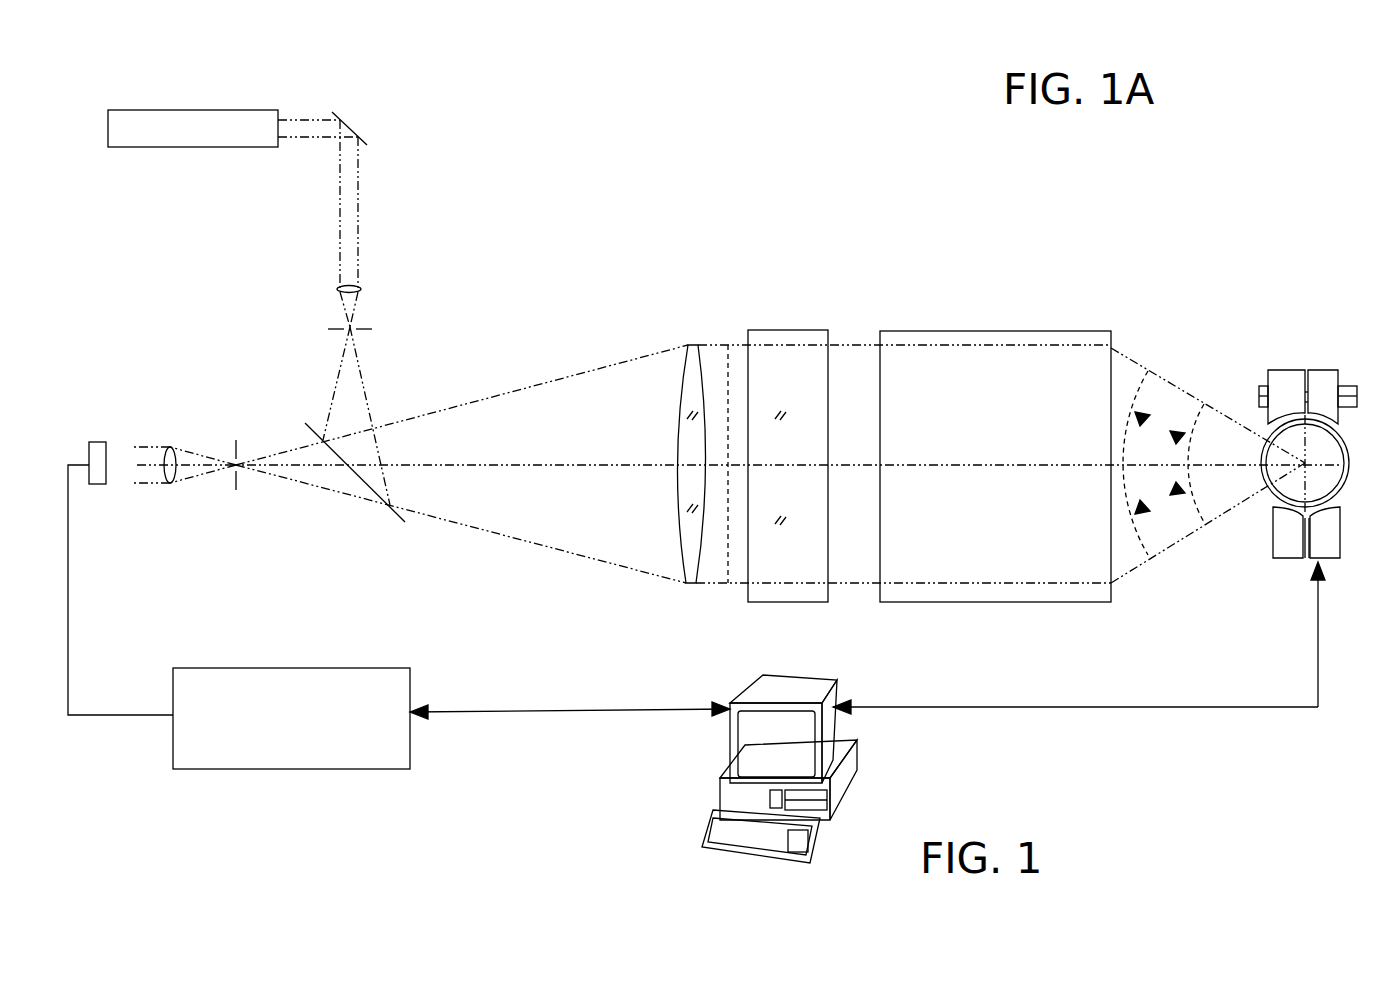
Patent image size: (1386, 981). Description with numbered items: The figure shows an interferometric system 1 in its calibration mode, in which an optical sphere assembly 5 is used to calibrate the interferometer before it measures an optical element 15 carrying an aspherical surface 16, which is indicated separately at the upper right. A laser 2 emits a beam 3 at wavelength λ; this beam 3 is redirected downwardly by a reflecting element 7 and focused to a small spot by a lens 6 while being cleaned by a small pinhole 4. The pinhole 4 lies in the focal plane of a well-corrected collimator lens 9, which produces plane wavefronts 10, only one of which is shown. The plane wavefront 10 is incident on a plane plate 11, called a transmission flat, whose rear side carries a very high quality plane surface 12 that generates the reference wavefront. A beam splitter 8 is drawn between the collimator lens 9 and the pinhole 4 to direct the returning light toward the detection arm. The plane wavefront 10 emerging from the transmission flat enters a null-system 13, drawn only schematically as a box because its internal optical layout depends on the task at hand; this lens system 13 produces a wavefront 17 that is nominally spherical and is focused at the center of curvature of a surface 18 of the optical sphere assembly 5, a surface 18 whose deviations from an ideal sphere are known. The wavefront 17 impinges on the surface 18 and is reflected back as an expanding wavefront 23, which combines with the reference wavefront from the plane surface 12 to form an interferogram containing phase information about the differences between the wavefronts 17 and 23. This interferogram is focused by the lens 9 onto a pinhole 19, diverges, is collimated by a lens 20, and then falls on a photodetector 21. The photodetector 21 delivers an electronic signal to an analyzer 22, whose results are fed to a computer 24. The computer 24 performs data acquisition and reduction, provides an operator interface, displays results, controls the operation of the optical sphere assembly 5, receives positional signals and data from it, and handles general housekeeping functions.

In FIG. 1, the interferometric system 1 is at (826, 206).
In FIG. 1, the laser 2 is at (265, 143).
In FIG. 1, the beam 3 is at (358, 242).
In FIG. 1, the pinhole 4 is at (365, 328).
In FIG. 1A, the optical sphere assembly 5 is at (1297, 362).
In FIG. 1, the lens 6 is at (360, 290).
In FIG. 1, the reflecting element 7 is at (345, 117).
In FIG. 1, the beam splitter 8 is at (368, 488).
In FIG. 1, the collimator lens 9 is at (693, 390).
In FIG. 1, the plane wavefront 10 is at (727, 392).
In FIG. 1, the plane plate 11 is at (800, 382).
In FIG. 1, the plane surface 12 is at (830, 382).
In FIG. 1, the null-system 13 is at (980, 368).
In FIG. 1A, the optical element 15 is at (1250, 143).
In FIG. 1A, the aspherical surface 16 is at (1200, 152).
In FIG. 1A, the wavefront 17 is at (1137, 400).
In FIG. 1A, the surface 18 is at (1273, 437).
In FIG. 1, the pinhole 19 is at (238, 490).
In FIG. 1, the lens 20 is at (172, 483).
In FIG. 1, the photodetector 21 is at (93, 484).
In FIG. 1, the analyzer 22 is at (451, 718).
In FIG. 1A, the expanding wavefront 23 is at (1200, 507).
In FIG. 1, the computer 24 is at (732, 787).